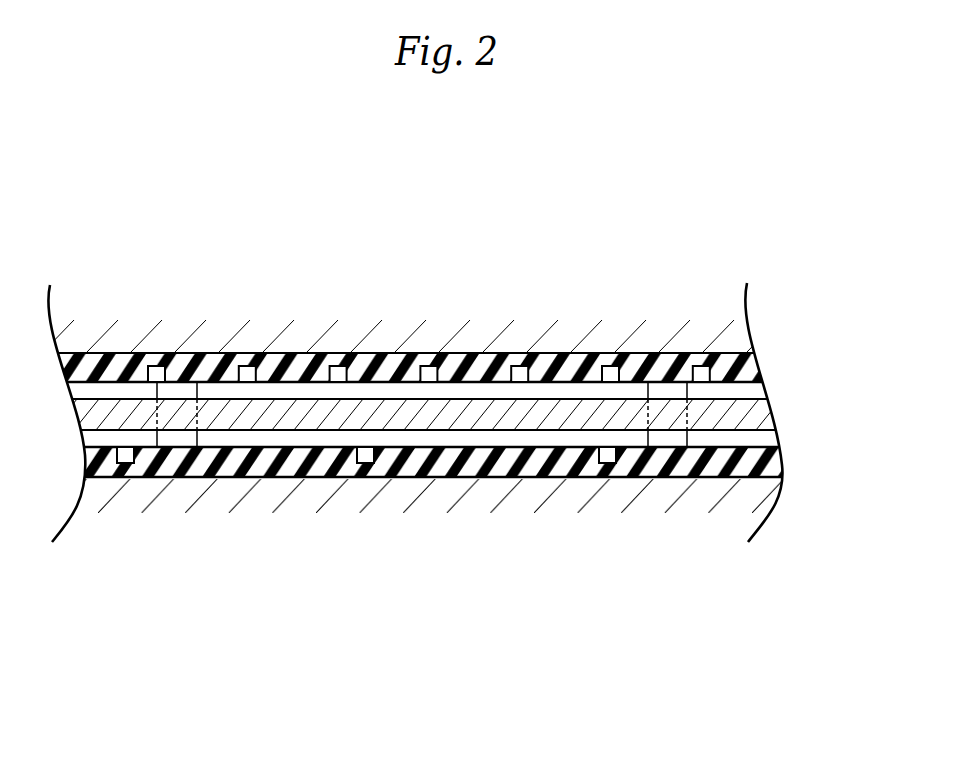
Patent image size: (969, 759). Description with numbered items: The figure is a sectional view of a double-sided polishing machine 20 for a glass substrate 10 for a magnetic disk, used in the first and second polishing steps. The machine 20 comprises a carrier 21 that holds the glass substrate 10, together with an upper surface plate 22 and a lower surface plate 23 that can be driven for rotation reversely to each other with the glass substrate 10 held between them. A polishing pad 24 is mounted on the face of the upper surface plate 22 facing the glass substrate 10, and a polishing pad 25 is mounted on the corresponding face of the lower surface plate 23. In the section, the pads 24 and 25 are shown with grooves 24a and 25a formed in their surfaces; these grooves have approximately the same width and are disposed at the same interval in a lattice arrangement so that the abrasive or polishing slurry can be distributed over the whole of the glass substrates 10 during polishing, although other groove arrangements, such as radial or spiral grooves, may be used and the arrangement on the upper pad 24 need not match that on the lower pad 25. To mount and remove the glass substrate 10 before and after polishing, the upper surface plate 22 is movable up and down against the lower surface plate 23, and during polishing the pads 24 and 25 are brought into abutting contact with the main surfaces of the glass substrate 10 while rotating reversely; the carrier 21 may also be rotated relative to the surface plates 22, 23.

The double-sided polishing machine 20 is at (702, 278).
The glass substrate 10 is at (385, 393).
The carrier 21 is at (757, 412).
The upper surface plate 22 is at (353, 277).
The lower surface plate 23 is at (303, 607).
The polishing pad 24 is at (117, 360).
The upper wiring patterns 24a is at (157, 366).
The polishing pad 25 is at (648, 462).
The lower wiring patterns 25a is at (607, 460).